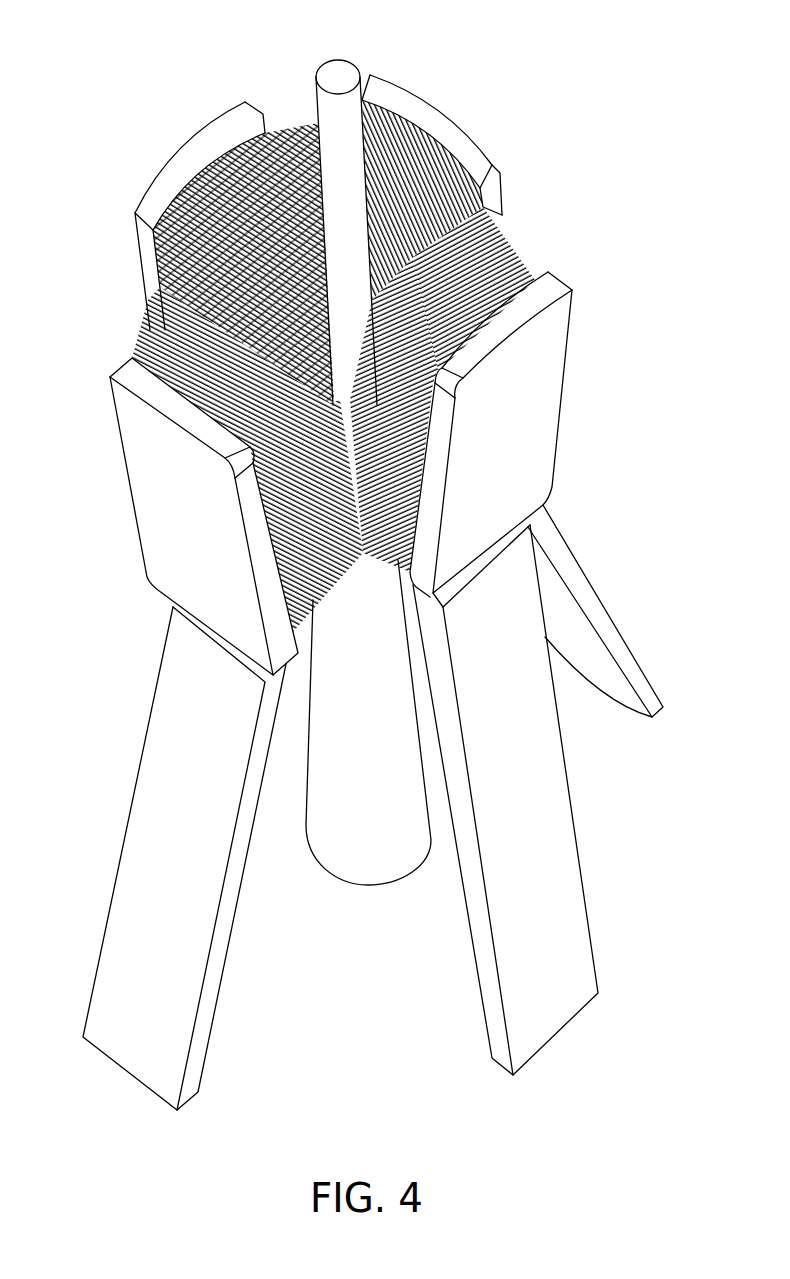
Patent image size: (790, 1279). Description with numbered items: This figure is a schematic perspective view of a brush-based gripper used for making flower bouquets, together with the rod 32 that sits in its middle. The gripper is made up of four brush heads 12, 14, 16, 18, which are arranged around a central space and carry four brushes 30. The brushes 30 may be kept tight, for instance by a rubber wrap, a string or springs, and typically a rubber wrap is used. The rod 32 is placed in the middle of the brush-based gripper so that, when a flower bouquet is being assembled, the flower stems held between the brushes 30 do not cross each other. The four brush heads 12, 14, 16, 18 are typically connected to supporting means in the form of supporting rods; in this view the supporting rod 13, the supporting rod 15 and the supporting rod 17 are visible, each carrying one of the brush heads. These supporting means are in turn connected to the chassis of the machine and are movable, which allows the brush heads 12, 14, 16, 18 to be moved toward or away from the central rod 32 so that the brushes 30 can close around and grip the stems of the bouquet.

The brush head 12 is at (438, 123).
The supporting rod 13 is at (600, 622).
The brush head 14 is at (510, 413).
The supporting rod 15 is at (548, 833).
The brush head 16 is at (185, 160).
The supporting rod 17 is at (182, 868).
The brush head 18 is at (160, 455).
The brush 30 is at (520, 248).
The rod 32 is at (336, 75).